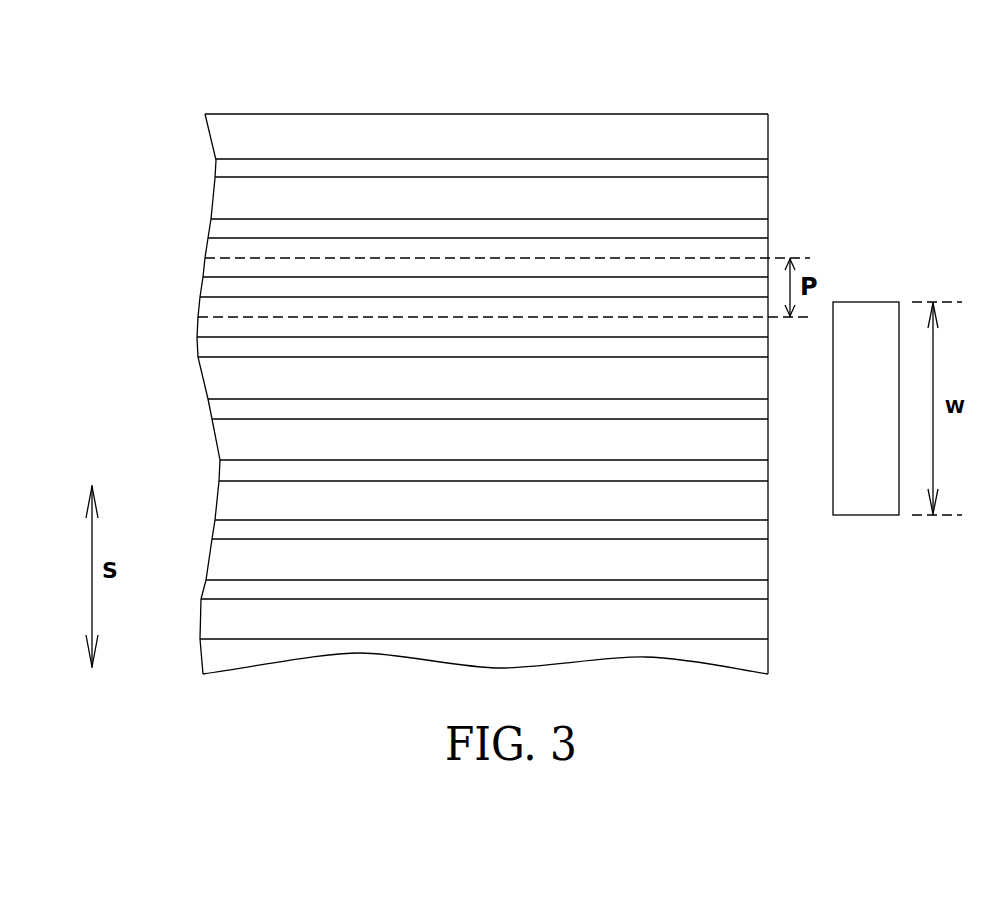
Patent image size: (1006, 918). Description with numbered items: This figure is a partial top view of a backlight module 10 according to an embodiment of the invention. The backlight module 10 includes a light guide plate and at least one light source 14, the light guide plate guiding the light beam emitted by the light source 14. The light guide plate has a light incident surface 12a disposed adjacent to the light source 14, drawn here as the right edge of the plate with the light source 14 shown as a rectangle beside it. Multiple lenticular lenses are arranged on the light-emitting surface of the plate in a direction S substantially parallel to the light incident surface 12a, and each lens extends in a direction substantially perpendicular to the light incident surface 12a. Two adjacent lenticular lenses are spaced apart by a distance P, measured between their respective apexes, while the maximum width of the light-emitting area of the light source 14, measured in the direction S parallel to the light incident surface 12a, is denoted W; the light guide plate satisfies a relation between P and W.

The backlight module 10 is at (66, 90).
The light incident surface 12a is at (769, 552).
The light source 14 is at (865, 505).